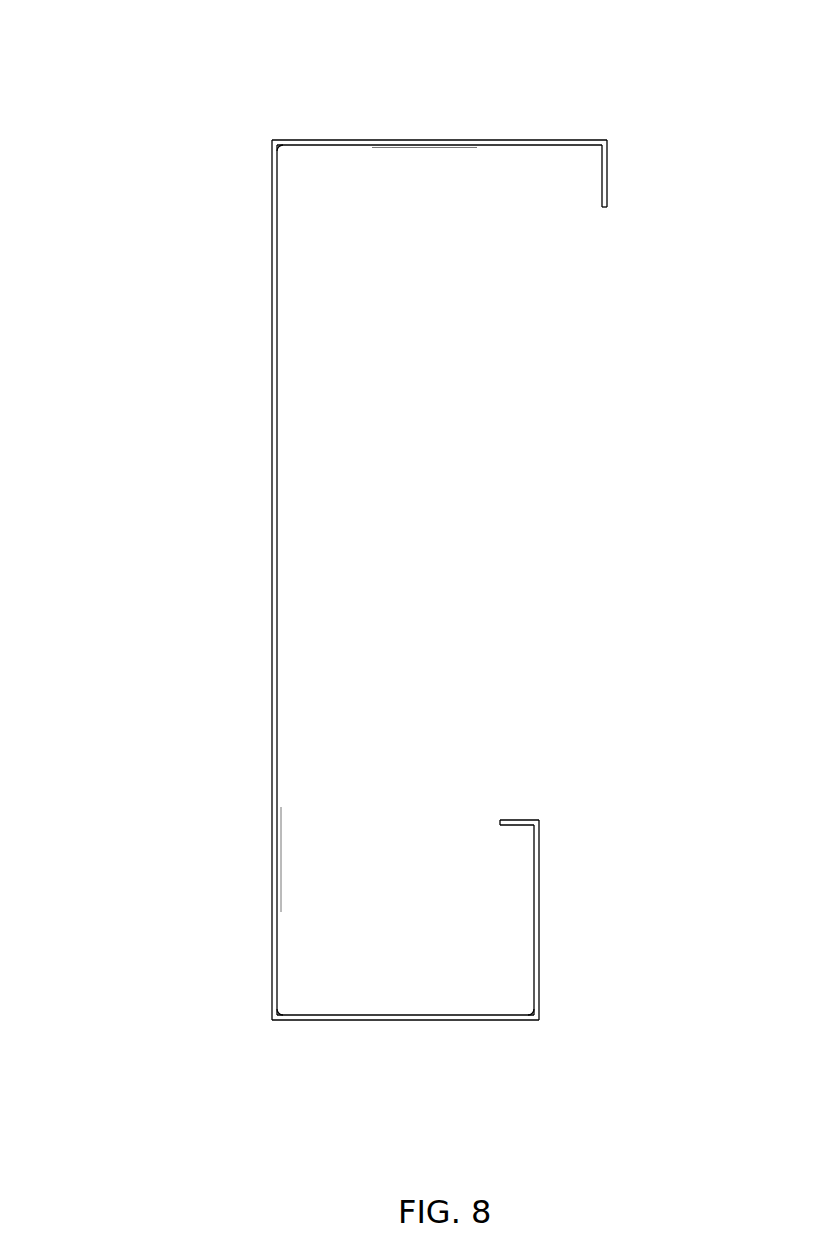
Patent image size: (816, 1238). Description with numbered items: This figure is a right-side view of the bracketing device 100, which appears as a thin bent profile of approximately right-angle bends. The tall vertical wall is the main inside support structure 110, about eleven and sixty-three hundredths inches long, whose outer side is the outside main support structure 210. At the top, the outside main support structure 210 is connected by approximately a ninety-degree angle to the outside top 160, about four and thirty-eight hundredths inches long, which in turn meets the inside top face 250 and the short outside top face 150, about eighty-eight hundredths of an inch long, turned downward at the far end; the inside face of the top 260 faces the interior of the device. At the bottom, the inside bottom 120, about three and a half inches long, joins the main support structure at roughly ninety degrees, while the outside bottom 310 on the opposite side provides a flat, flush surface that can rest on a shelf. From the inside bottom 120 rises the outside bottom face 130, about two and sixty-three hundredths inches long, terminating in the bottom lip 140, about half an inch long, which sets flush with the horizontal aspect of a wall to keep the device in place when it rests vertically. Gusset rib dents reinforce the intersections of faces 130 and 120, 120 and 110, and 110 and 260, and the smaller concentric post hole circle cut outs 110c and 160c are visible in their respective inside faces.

The bracketing device 100 is at (365, 584).
The main inside support structure 110 is at (277, 580).
The concentric post hole circle cut out 110c is at (280, 832).
The inside bottom 120 is at (405, 1024).
The outside bottom face 130 is at (541, 932).
The bottom lip 140 is at (517, 819).
The outside top face 150 is at (614, 193).
The outside top 160 is at (439, 145).
The concentric post hole circle cut out 160c is at (433, 150).
The outside main support structure 210 is at (271, 373).
The inside top face 250 is at (600, 185).
The inside face of the top 260 is at (327, 146).
The outside bottom 310 is at (317, 1022).